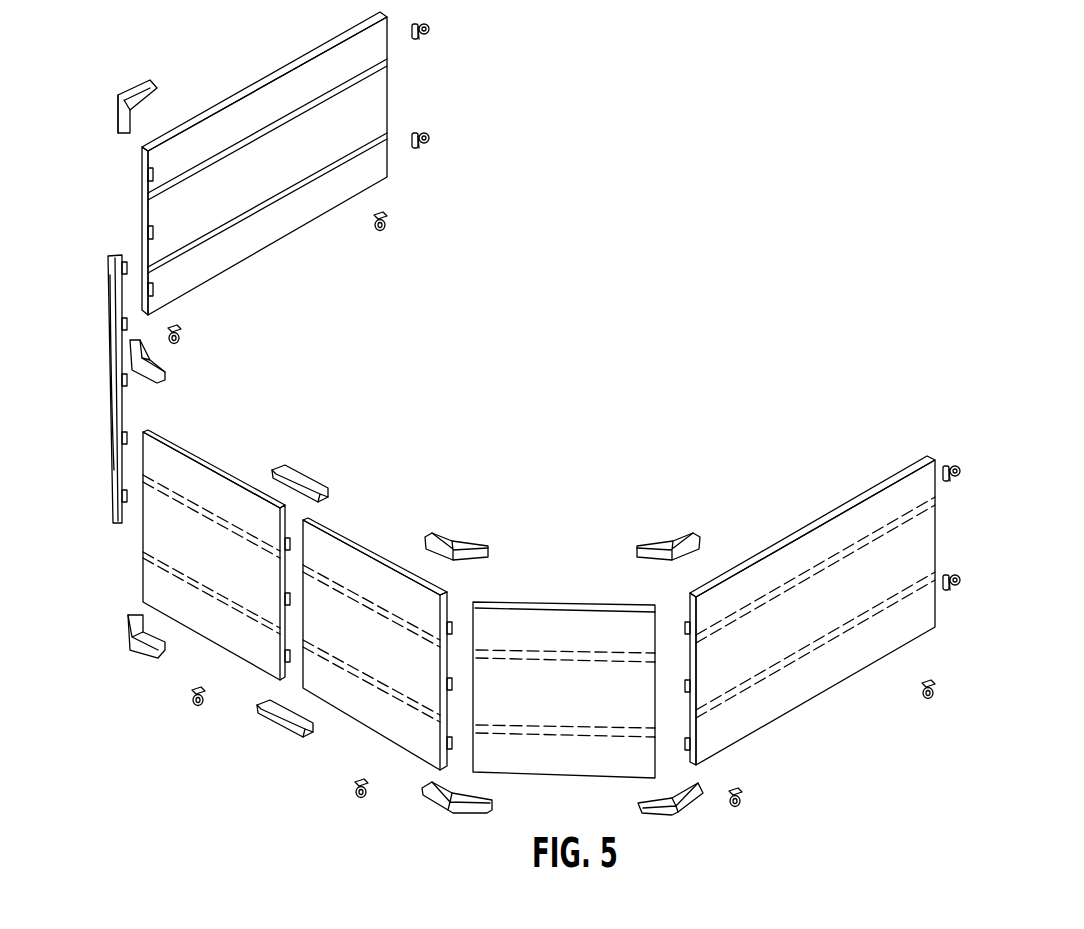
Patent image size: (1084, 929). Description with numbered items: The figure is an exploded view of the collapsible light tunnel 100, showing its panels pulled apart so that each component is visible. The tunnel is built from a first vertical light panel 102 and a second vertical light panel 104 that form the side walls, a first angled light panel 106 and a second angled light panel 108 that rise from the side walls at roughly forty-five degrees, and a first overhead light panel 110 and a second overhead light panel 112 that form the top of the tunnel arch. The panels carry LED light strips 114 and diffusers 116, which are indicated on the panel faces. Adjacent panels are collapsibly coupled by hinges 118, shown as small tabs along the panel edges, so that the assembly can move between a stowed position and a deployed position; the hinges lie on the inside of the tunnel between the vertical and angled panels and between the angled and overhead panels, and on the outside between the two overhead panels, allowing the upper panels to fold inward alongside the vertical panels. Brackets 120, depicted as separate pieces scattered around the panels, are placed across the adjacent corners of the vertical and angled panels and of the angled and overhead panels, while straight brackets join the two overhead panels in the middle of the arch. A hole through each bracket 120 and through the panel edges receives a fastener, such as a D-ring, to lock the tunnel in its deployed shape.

The collapsible light tunnel 100 is at (672, 200).
The first vertical light panel 102 is at (282, 72).
The second vertical light panel 104 is at (768, 707).
The first angled light panel 106 is at (117, 307).
The second angled light panel 108 is at (563, 762).
The first overhead light panel 110 is at (150, 577).
The second overhead light panel 112 is at (405, 728).
The LED light strips 114 is at (157, 558).
The diffusers 116 is at (253, 235).
The hinges 118 is at (148, 232).
The brackets 120 is at (140, 88).